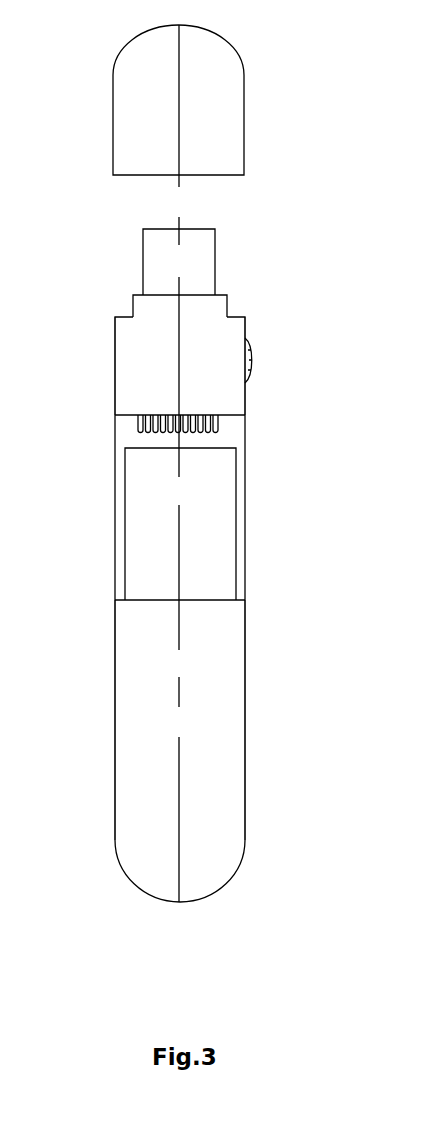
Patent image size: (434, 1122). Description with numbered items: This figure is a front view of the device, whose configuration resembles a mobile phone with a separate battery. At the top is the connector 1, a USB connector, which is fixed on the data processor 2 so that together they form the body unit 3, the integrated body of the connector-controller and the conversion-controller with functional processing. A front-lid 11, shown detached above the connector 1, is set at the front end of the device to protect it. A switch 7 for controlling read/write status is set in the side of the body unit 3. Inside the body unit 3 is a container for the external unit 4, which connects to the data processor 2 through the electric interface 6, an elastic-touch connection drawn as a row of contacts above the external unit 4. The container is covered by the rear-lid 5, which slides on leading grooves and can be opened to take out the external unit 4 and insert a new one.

The front-lid 11 is at (220, 97).
The connector 1 is at (202, 272).
The data processor 2 is at (143, 365).
The body unit 3 is at (255, 502).
The external unit 4 is at (138, 535).
The rear-lid 5 is at (130, 688).
The electric interface 6 is at (137, 422).
The switch 7 is at (253, 358).